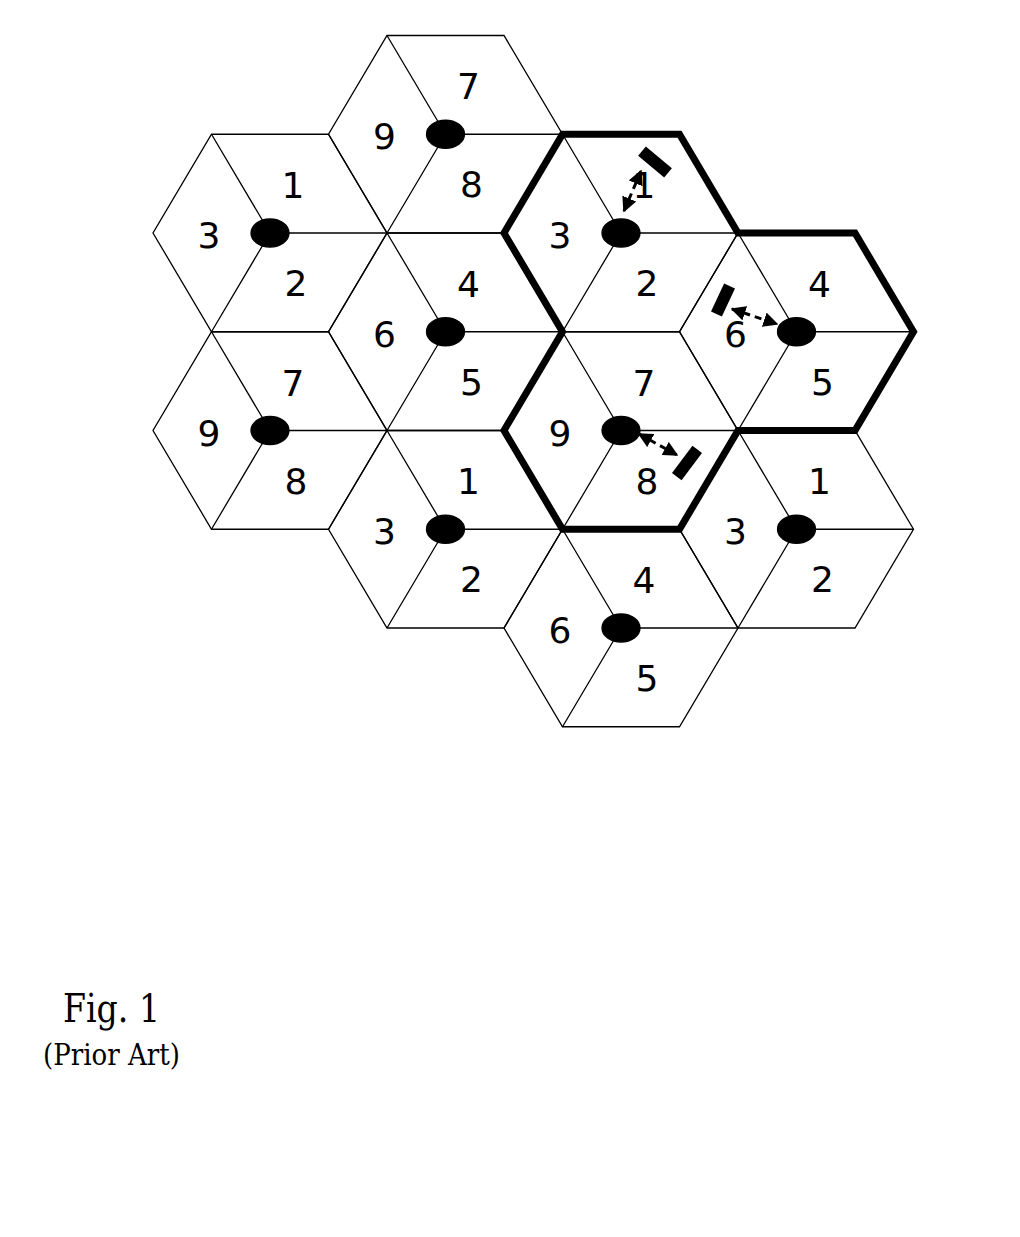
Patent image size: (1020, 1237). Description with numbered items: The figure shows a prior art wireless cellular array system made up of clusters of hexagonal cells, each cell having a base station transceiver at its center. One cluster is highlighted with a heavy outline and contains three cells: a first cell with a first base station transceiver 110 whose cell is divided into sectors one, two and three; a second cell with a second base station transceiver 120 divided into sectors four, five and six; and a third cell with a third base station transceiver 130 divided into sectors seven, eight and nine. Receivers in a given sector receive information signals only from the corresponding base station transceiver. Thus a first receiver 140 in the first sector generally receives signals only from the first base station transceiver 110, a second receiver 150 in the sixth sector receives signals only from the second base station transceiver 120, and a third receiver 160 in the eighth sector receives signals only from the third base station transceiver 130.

The first base station transceiver 110 is at (640, 231).
The second base station transceiver 120 is at (813, 322).
The third base station transceiver 130 is at (620, 444).
The first receiver 140 is at (655, 147).
The second receiver 150 is at (735, 283).
The third receiver 160 is at (687, 485).